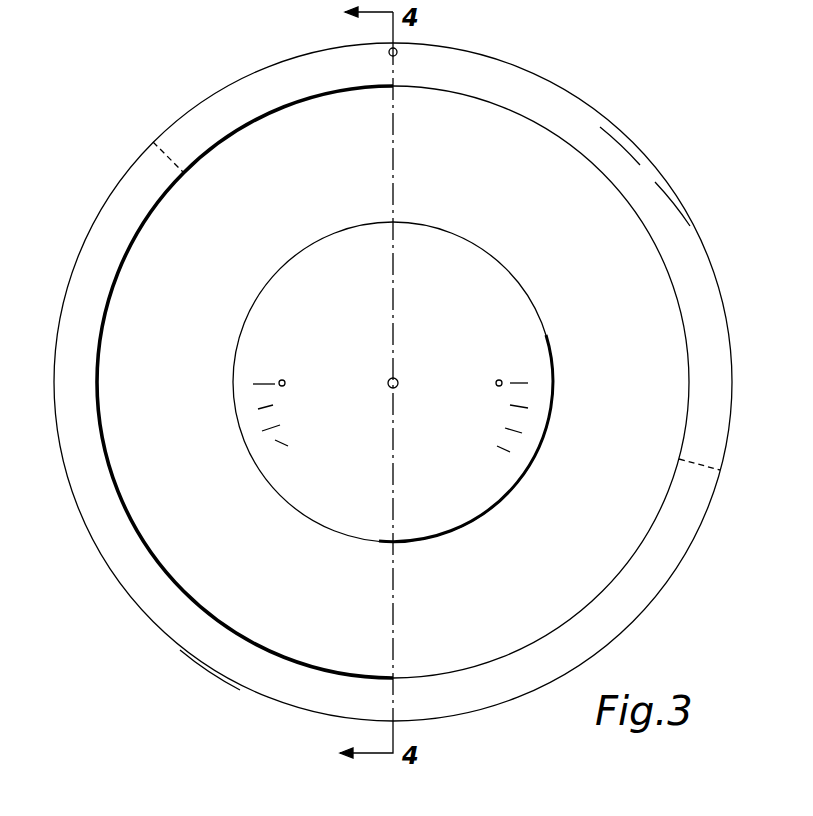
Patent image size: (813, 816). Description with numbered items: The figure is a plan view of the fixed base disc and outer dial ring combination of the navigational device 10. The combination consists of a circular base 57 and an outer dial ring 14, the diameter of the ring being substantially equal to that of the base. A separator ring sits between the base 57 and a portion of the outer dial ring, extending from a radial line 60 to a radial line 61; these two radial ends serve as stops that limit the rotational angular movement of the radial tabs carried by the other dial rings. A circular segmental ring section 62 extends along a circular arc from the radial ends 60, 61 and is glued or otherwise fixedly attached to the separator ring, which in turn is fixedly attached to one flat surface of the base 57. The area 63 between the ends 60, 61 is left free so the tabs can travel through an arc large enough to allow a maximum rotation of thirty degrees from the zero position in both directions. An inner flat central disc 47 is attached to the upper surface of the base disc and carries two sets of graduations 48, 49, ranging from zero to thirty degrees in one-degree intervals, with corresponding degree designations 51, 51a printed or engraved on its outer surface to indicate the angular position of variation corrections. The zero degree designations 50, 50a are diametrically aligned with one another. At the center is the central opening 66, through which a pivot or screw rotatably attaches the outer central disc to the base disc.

The gauge assembly 10 is at (567, 93).
The outer dial ring 14 is at (618, 136).
The free area 63 is at (672, 201).
The circular base 57 is at (126, 276).
The radial line 60 is at (180, 170).
The radial line 61 is at (697, 464).
The circular segmental ring section 62 is at (212, 655).
The inner flat central disc 47 is at (330, 518).
The central opening 66 is at (398, 382).
The 0 degree designation 50 is at (285, 381).
The 0 degree designation 50a is at (497, 382).
The set of graduations 48 is at (282, 450).
The set of graduations 49 is at (504, 452).
The degree designation 51 is at (306, 442).
The degree designation 51a is at (480, 445).